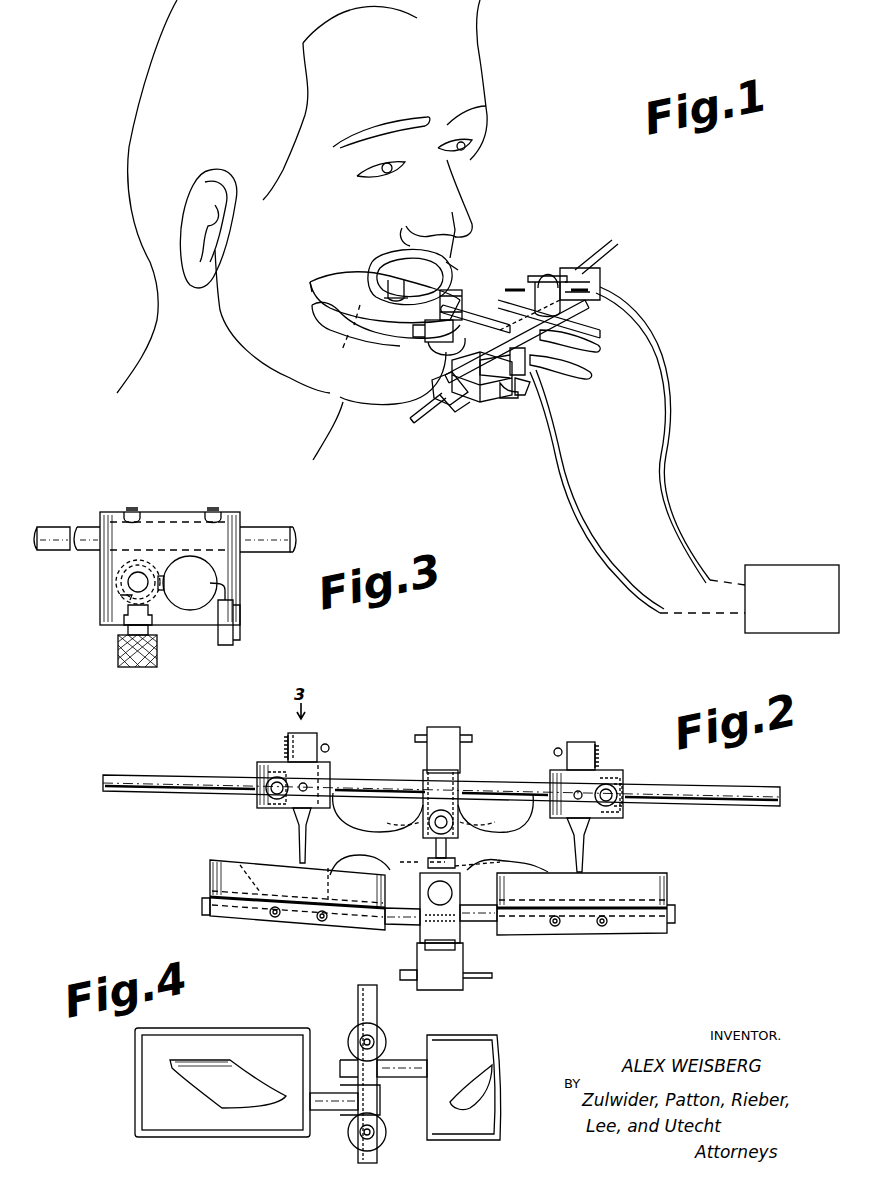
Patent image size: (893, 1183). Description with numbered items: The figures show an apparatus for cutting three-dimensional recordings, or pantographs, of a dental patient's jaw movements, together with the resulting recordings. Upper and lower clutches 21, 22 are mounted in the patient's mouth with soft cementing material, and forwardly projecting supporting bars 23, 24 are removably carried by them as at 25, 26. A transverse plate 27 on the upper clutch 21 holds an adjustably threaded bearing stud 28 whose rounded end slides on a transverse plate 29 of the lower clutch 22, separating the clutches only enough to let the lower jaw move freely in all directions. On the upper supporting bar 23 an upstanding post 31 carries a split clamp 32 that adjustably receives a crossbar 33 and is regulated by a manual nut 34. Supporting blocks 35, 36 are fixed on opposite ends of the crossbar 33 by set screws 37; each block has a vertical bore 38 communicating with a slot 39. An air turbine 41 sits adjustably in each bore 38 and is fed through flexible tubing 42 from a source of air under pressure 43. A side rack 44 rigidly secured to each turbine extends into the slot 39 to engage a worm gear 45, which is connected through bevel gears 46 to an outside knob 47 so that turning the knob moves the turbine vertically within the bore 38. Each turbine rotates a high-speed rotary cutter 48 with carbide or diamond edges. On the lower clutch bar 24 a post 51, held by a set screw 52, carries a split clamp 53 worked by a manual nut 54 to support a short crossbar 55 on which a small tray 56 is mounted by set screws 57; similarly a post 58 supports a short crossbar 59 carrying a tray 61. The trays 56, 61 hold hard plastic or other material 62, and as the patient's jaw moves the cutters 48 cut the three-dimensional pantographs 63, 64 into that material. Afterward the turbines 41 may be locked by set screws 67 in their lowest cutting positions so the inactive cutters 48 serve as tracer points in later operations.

In FIG. 1, the upper clutch 21 is at (310, 285).
In FIG. 2, the upper clutch 21 is at (340, 822).
In FIG. 1, the lower clutch 22 is at (312, 308).
In FIG. 2, the lower clutch 22 is at (380, 846).
In FIG. 1, the upper supporting bar 23 is at (460, 310).
In FIG. 2, the upper supporting bar 23 is at (455, 815).
In FIG. 1, the lower supporting bar 24 is at (425, 338).
In FIG. 2, the lower supporting bar 24 is at (420, 892).
In FIG. 1, the removable mounting of upper bar 25 is at (464, 300).
In FIG. 1, the removable mounting of lower bar 26 is at (395, 302).
In FIG. 1, the upper post 27 is at (452, 268).
In FIG. 1, the bearing stud 28 is at (372, 270).
In FIG. 2, the bearing stud 28 is at (458, 860).
In FIG. 1, the transverse plate 29 is at (342, 344).
In FIG. 2, the transverse plate 29 is at (490, 868).
In FIG. 1, the upstanding post 31 is at (600, 347).
In FIG. 1, the split clamp 32 is at (580, 324).
In FIG. 1, the crossbar 33 is at (512, 300).
In FIG. 3, the crossbar 33 is at (270, 530).
In FIG. 2, the crossbar 33 is at (475, 781).
In FIG. 1, the manual nut 34 is at (556, 276).
In FIG. 1, the supporting block 35 is at (455, 415).
In FIG. 3, the supporting block 35 is at (100, 616).
In FIG. 2, the supporting block 35 is at (330, 765).
In FIG. 1, the supporting block 36 is at (602, 285).
In FIG. 2, the supporting block 36 is at (624, 782).
In FIG. 3, the set screws 37 is at (212, 508).
In FIG. 3, the vertical bore 38 is at (216, 575).
In FIG. 2, the vertical bore 38 is at (548, 778).
In FIG. 3, the slot 39 is at (164, 578).
In FIG. 3, the air turbine 41 is at (190, 600).
In FIG. 2, the air turbine 41 is at (305, 740).
In FIG. 1, the flexible tubing 42 is at (560, 462).
In FIG. 3, the flexible tubing 42 is at (234, 637).
In FIG. 1, the source of air under pressure 43 is at (785, 575).
In FIG. 2, the side rack 44 is at (284, 745).
In FIG. 3, the worm gear 45 is at (118, 570).
In FIG. 2, the worm gear 45 is at (255, 760).
In FIG. 3, the bevel gears 46 is at (120, 595).
In FIG. 3, the outside knob 47 is at (128, 667).
In FIG. 2, the outside knob 47 is at (266, 795).
In FIG. 2, the rotary cutter 48 is at (299, 857).
In FIG. 1, the post 51 is at (540, 375).
In FIG. 2, the post 51 is at (456, 896).
In FIG. 4, the post 51 is at (348, 1138).
In FIG. 1, the set screw 52 is at (592, 374).
In FIG. 4, the set screw 52 is at (386, 1142).
In FIG. 1, the split clamp 53 is at (530, 395).
In FIG. 1, the manual nut 54 is at (510, 398).
In FIG. 1, the short crossbar 55 is at (480, 403).
In FIG. 2, the short crossbar 55 is at (405, 925).
In FIG. 4, the short crossbar 55 is at (342, 1093).
In FIG. 2, the small tray 56 is at (210, 878).
In FIG. 4, the small tray 56 is at (135, 1050).
In FIG. 2, the set screws 57 is at (275, 918).
In FIG. 1, the post 58 is at (428, 350).
In FIG. 4, the post 58 is at (386, 1038).
In FIG. 2, the short crossbar 59 is at (487, 932).
In FIG. 4, the short crossbar 59 is at (392, 1078).
In FIG. 2, the tray 61 is at (670, 898).
In FIG. 4, the tray 61 is at (472, 1038).
In FIG. 2, the hard plastic material 62 is at (240, 860).
In FIG. 4, the hard plastic material 62 is at (152, 1088).
In FIG. 4, the three-dimensional pantograph 63 is at (222, 1108).
In FIG. 4, the three-dimensional pantograph 64 is at (498, 1080).
In FIG. 2, the set screws 67 is at (302, 792).